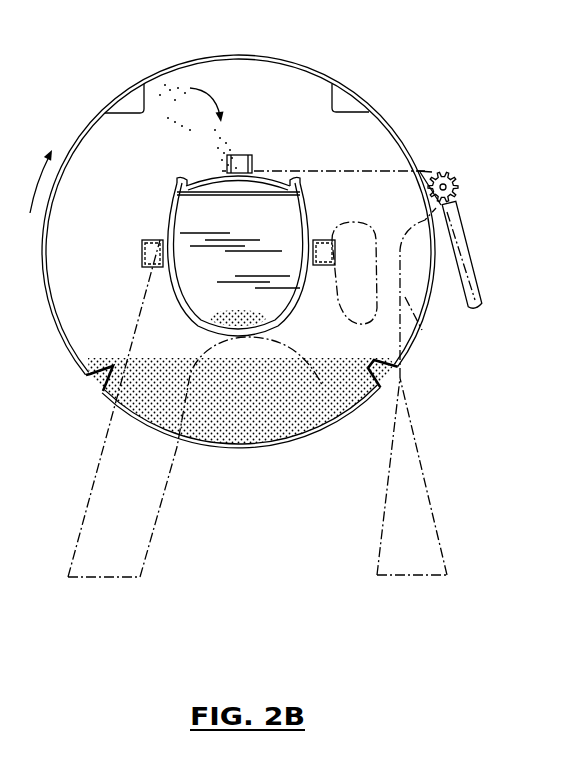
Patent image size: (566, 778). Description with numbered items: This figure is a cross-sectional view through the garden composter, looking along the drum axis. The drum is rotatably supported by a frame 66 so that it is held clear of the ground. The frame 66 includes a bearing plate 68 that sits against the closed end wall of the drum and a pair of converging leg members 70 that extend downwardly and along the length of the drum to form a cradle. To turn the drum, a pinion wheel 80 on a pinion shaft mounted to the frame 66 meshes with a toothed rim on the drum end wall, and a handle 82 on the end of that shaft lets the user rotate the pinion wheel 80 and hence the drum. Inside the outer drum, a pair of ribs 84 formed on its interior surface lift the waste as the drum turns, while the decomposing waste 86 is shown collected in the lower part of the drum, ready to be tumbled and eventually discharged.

The frame 66 is at (355, 169).
The bearing plate 68 is at (425, 327).
The converging leg members 70 is at (420, 472).
The pinion wheel 80 is at (441, 172).
The handle 82 is at (472, 253).
The ribs 84 is at (110, 368).
The decomposing waste 86 is at (163, 368).